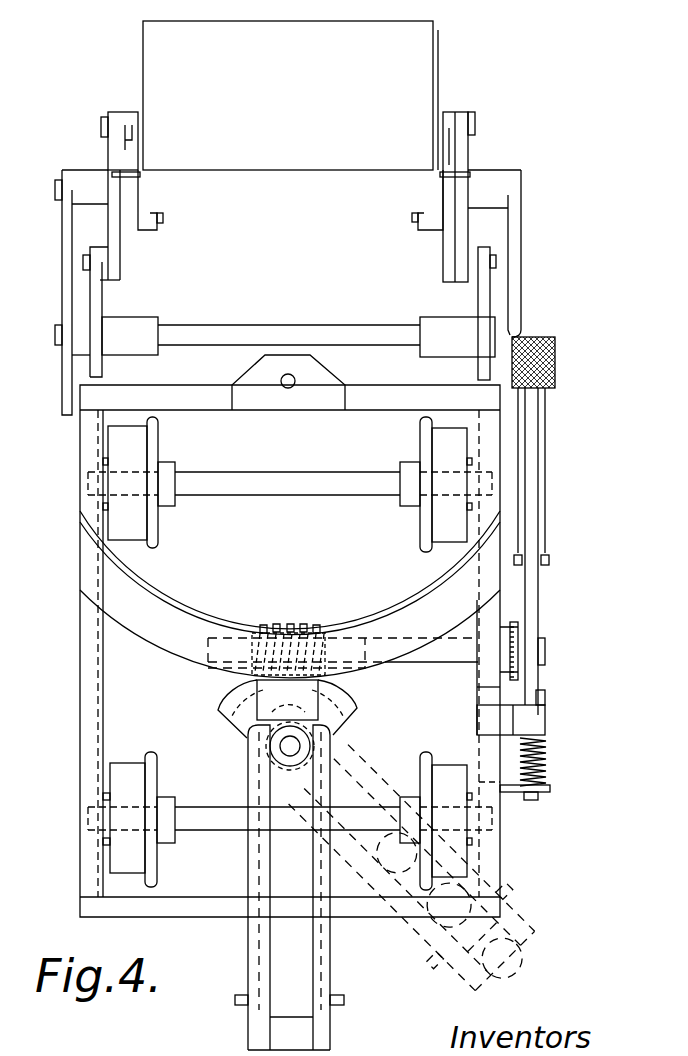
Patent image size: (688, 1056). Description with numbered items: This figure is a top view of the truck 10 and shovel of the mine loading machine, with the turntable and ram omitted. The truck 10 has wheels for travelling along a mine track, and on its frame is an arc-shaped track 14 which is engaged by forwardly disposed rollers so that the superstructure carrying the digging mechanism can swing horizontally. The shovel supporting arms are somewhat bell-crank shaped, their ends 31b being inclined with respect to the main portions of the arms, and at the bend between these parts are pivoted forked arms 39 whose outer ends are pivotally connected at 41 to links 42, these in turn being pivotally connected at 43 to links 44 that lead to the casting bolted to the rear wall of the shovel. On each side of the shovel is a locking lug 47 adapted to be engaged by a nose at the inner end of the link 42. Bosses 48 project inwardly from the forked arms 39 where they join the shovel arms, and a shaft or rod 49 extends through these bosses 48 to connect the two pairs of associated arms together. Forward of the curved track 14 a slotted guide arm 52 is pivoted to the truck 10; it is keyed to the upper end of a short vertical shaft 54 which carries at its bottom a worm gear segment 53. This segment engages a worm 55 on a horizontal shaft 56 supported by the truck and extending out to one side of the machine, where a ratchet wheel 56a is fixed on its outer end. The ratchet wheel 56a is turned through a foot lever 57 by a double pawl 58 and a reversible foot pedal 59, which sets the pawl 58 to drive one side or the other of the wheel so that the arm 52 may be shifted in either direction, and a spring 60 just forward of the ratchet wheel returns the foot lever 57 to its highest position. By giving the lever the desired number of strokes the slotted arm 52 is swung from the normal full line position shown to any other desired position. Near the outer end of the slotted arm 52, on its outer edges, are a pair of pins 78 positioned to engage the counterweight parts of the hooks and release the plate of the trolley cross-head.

The truck 10 is at (76, 727).
The arc-shaped track 14 is at (176, 639).
The ends of the arms 31b is at (524, 232).
The forked arms 39 is at (485, 302).
The pivotal connection 41 is at (497, 262).
The links 42 is at (462, 158).
The pivotal connection 43 is at (473, 118).
The links 44 is at (446, 152).
The locking lug 47 is at (472, 175).
The bosses 48 is at (148, 323).
The shaft or rod 49 is at (340, 324).
The slotted guide arm 52 is at (332, 957).
The worm gear segment 53 is at (248, 740).
The short vertical shaft 54 is at (288, 745).
The worm 55 is at (300, 612).
The horizontal shaft 56 is at (447, 656).
The ratchet wheel 56a is at (513, 622).
The double pawl 58 is at (525, 696).
The foot lever 57 is at (532, 428).
The reversible foot pedal 59 is at (557, 345).
The spring 60 is at (544, 754).
The pins 78 is at (336, 1002).